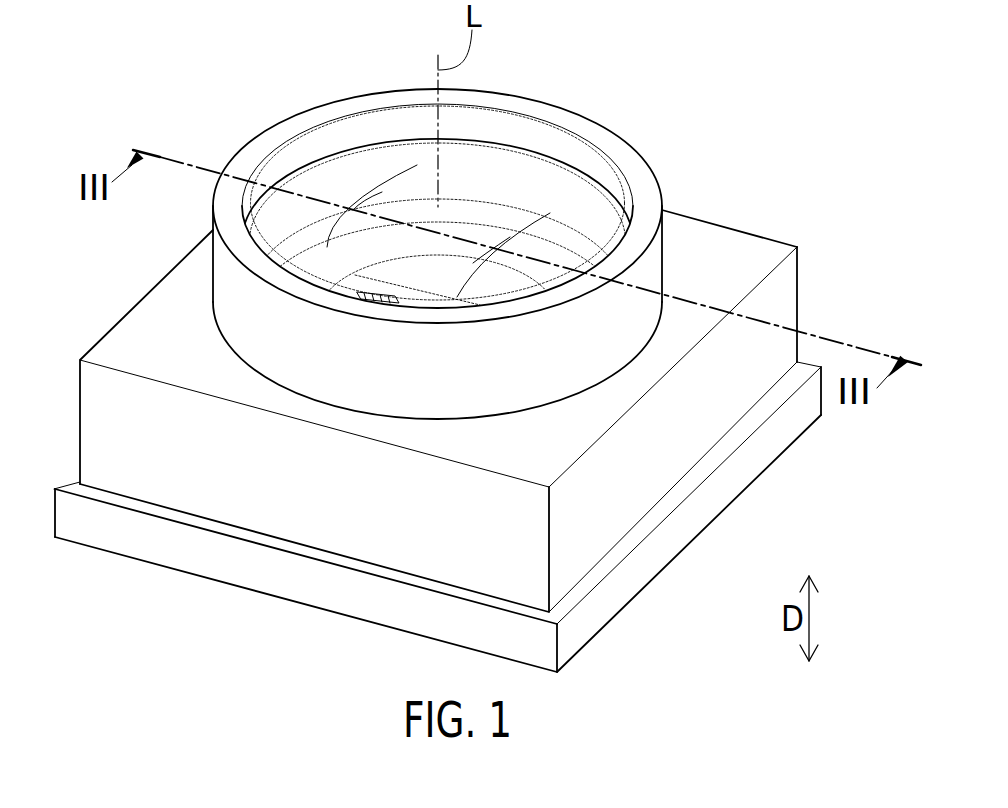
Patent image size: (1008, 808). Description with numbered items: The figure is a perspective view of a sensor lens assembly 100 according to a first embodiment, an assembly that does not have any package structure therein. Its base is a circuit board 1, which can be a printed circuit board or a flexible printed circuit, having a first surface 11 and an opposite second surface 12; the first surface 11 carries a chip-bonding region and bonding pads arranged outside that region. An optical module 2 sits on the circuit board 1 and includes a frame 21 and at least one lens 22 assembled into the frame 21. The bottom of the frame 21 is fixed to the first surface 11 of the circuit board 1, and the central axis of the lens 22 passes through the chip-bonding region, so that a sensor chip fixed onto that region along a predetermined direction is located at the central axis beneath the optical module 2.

The sensor lens assembly 100 is at (711, 117).
The circuit board 1 is at (49, 512).
The first surface 11 is at (65, 473).
The second surface 12 is at (87, 556).
The optical module 2 is at (607, 38).
The frame 21 is at (584, 112).
The lens 22 is at (532, 144).